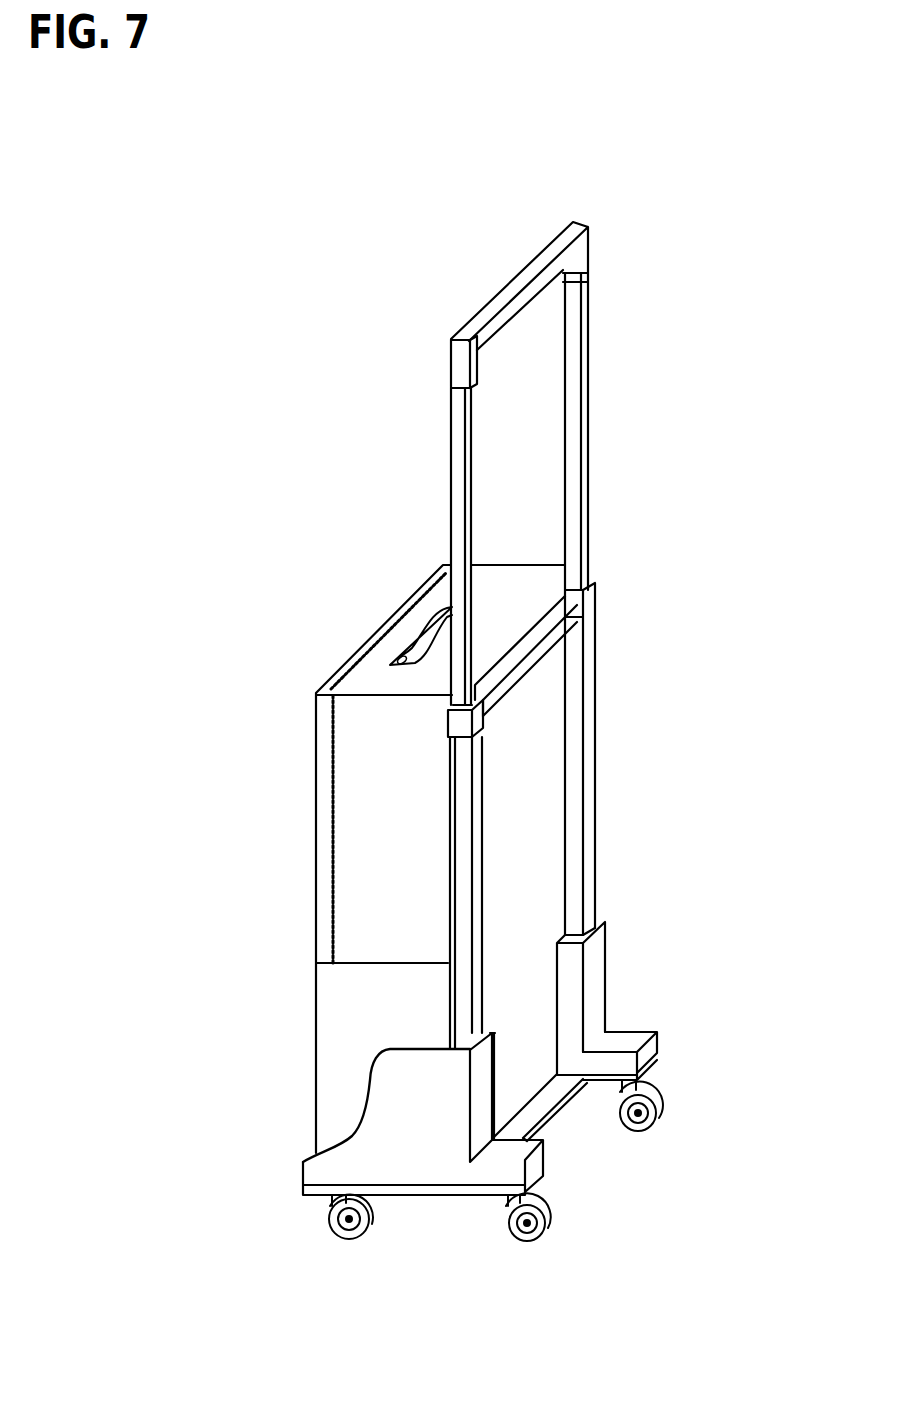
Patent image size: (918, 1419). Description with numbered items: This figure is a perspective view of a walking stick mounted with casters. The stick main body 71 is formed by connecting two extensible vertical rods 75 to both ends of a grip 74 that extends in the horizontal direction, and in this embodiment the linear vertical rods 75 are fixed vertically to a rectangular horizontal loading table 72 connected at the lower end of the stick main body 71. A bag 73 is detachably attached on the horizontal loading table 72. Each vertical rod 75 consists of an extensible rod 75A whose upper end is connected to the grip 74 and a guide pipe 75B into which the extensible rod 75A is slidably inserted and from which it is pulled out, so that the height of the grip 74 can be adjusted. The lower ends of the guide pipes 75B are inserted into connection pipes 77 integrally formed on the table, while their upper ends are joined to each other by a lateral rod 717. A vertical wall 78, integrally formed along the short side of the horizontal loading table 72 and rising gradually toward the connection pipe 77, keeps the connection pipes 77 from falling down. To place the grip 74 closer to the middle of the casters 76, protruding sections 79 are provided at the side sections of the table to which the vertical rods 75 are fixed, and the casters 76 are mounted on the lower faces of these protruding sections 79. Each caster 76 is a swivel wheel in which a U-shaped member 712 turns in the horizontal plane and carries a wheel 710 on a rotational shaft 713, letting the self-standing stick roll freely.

The stick main body 71 is at (623, 366).
The horizontal loading table 72 is at (545, 1103).
The bag 73 is at (350, 808).
The grip 74 is at (495, 307).
The vertical rod 75 is at (697, 587).
The extensible rod 75A is at (575, 522).
The guide pipe 75B is at (588, 663).
The caster 76 is at (689, 1100).
The connection pipe 77 is at (598, 958).
The vertical wall 78 is at (380, 1112).
The protruding section 79 is at (637, 1033).
The wheel 710 is at (350, 1240).
The U-shaped member 712 is at (327, 1199).
The rotational shaft 713 is at (340, 1239).
The lateral rod 717 is at (525, 673).